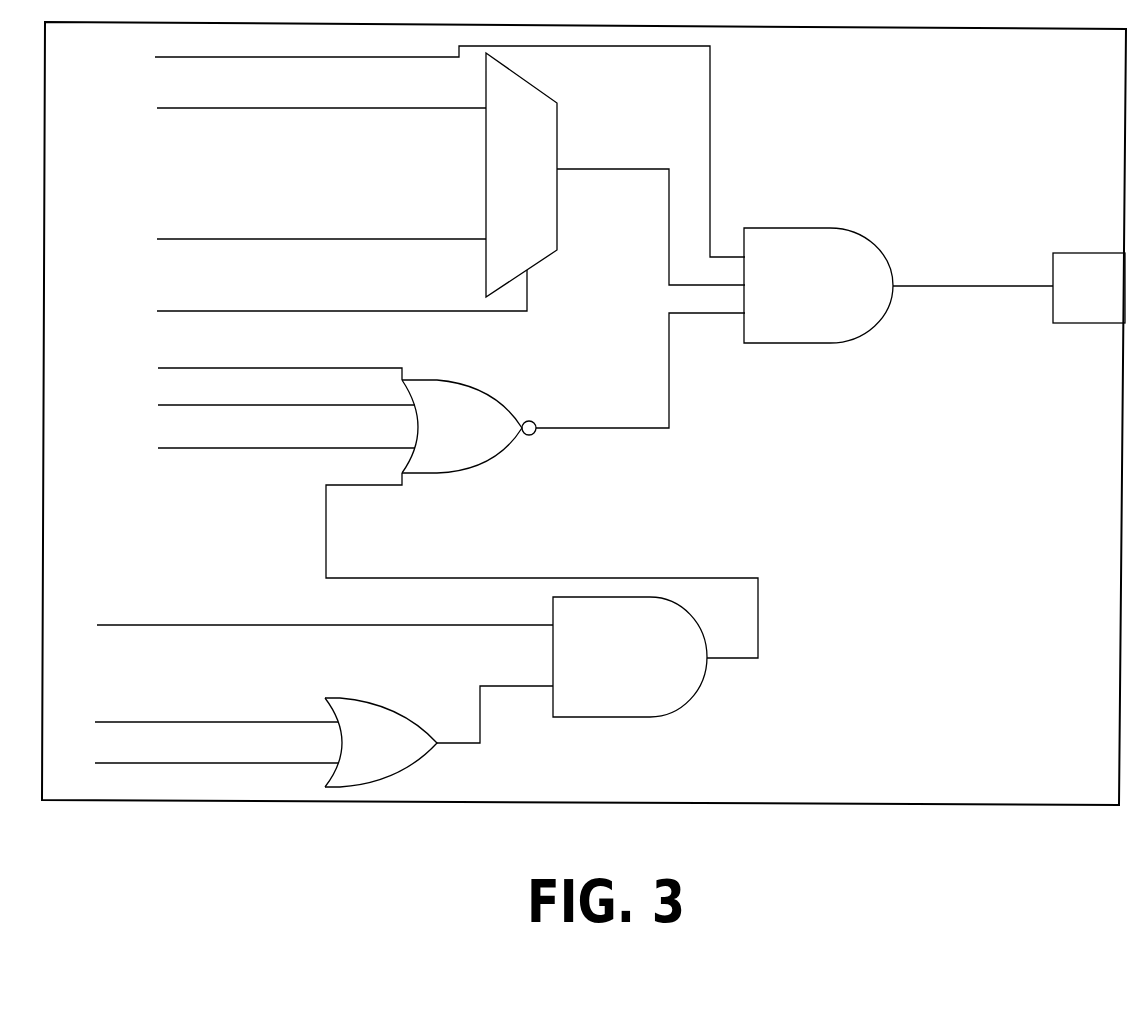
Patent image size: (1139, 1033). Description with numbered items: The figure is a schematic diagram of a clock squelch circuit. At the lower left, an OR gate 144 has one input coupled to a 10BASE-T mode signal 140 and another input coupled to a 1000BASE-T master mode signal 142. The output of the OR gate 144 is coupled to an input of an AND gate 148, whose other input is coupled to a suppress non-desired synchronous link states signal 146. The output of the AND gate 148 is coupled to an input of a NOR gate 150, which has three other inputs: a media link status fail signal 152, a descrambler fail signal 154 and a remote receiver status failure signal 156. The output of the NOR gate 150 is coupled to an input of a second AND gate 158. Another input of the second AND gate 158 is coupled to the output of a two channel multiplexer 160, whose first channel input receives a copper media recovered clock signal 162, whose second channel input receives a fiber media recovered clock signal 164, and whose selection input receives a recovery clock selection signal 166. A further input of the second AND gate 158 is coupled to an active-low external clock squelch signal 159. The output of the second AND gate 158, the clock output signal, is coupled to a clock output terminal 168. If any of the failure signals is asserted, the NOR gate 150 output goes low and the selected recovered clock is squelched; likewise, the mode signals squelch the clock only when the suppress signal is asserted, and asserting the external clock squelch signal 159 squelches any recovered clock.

The 10BASE-T mode signal 140 is at (316, 722).
The 1000BASE-T master mode signal 142 is at (311, 763).
The OR gate 144 is at (400, 755).
The suppress non-desired synchronous link states signal 146 is at (481, 625).
The AND gate 148 is at (628, 672).
The NOR gate 150 is at (475, 438).
The media link status fail signal 152 is at (393, 368).
The descrambler fail signal 154 is at (384, 405).
The remote receiver status failure signal 156 is at (356, 448).
The second AND gate 158 is at (830, 298).
The external clock squelch signal 159 is at (451, 57).
The two channel multiplexer 160 is at (535, 167).
The copper media recovered clock signal 162 is at (473, 108).
The fiber media recovered clock signal 164 is at (467, 239).
The recovery clock selection signal 166 is at (462, 311).
The clock output terminal 168 is at (1103, 303).